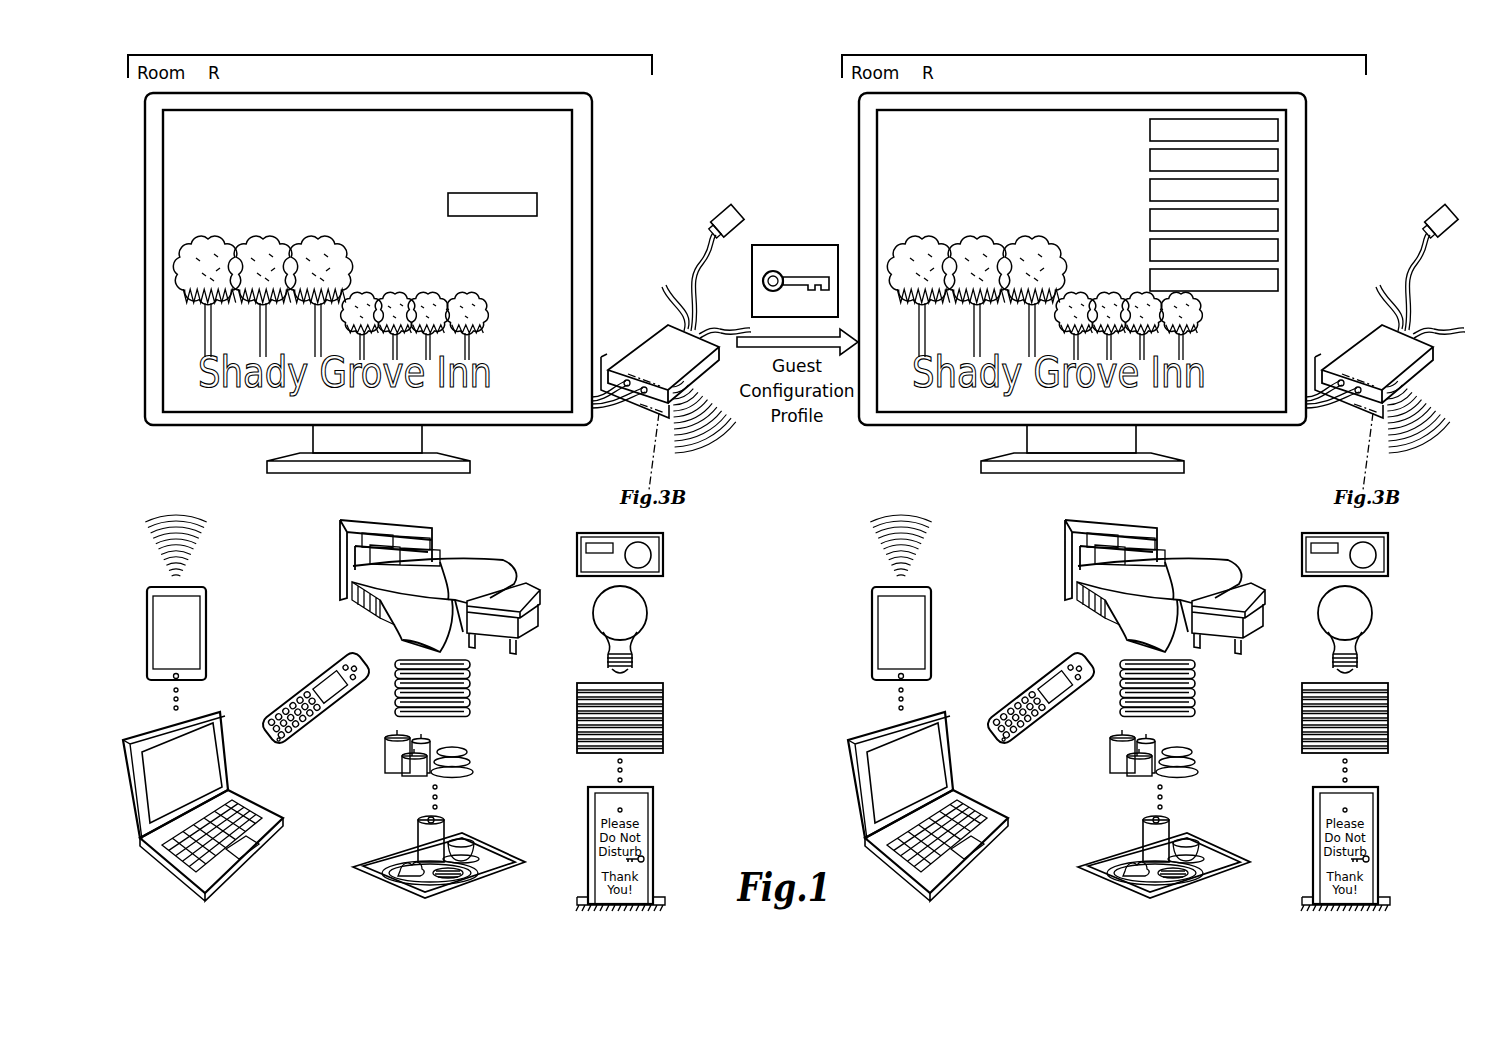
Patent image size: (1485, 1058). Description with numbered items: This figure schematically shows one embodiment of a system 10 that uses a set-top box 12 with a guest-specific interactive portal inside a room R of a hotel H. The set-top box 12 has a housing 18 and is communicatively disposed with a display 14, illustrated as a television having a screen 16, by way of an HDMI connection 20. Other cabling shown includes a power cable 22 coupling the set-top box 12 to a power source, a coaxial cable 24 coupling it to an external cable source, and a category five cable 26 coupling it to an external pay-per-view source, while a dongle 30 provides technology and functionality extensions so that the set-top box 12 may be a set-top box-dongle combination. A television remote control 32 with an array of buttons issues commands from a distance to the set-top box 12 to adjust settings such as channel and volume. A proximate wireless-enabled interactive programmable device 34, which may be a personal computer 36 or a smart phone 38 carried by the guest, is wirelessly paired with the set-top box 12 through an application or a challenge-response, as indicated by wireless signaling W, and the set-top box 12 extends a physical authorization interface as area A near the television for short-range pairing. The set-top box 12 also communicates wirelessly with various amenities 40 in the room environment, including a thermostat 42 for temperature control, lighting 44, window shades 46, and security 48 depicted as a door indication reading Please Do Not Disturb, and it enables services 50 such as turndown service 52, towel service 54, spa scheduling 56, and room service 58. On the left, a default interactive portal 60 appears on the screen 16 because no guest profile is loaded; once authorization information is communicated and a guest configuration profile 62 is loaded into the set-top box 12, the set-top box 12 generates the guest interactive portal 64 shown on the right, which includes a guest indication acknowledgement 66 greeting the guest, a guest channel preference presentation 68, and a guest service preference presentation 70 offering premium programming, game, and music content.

The system 10 is at (658, 89).
The set-top box 12 is at (634, 349).
The display 14 is at (600, 191).
The screen 16 is at (367, 239).
The housing 18 is at (663, 350).
The HDMI connection 20 is at (618, 425).
The power cable 22 is at (604, 427).
The coaxial cable 24 is at (679, 285).
The category five (Cat 5) cable 26 is at (725, 300).
The dongle 30 is at (724, 246).
The television remote control 32 is at (306, 697).
The proximate wireless-enabled interactive programmable device 34 is at (234, 744).
The personal computer 36 is at (215, 806).
The smart phone 38 is at (215, 633).
The amenities 40 is at (661, 722).
The thermostat 42 is at (647, 554).
The lighting 44 is at (646, 629).
The window shades 46 is at (647, 718).
The security 48 is at (641, 849).
The services 50 is at (401, 585).
The turndown service 52 is at (434, 584).
The towel service 54 is at (460, 688).
The spa scheduling 56 is at (455, 754).
The room service 58 is at (448, 862).
The default interactive portal 60 is at (555, 133).
The guest configuration profile 62 is at (785, 254).
The guest interactive portal 64 is at (1011, 259).
The guest indication acknowledgement 66 is at (957, 188).
The guest channel preference presentation 68 is at (1255, 200).
The guest service preference presentation 70 is at (1255, 213).